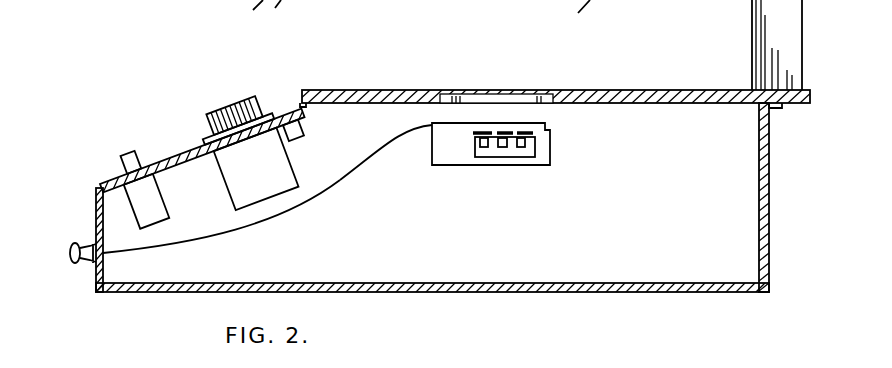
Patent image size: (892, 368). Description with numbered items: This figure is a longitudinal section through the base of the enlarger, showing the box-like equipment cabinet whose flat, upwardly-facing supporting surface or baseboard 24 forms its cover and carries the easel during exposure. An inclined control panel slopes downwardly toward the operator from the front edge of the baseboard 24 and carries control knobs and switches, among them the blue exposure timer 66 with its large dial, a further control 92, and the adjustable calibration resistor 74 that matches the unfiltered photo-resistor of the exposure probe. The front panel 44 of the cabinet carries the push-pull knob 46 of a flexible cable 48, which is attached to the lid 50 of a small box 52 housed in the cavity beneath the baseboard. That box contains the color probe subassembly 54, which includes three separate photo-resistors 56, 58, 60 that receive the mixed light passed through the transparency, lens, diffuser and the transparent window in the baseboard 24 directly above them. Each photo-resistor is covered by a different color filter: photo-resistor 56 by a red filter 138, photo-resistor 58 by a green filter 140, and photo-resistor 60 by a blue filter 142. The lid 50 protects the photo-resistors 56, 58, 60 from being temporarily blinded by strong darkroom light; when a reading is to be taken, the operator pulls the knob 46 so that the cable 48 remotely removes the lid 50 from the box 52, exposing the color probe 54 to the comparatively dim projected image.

The supporting surface (baseboard) 24 is at (370, 90).
The front panel 44 is at (203, 150).
The push-pull knob 46 is at (84, 248).
The flexible cable 48 is at (300, 208).
The lid 50 is at (551, 133).
The small box 52 is at (428, 150).
The color probe subassembly 54 is at (466, 150).
The photo-resistor (red-filtered) 56 is at (500, 88).
The photo-resistor (green-filtered) 58 is at (510, 148).
The photo-resistor (blue-filtered) 60 is at (525, 148).
The timer 66 is at (247, 153).
The variable resistor 74 is at (293, 131).
The switch knob 92 is at (141, 188).
The red filter 138 is at (478, 131).
The green filter 140 is at (500, 131).
The blue filter 142 is at (530, 131).